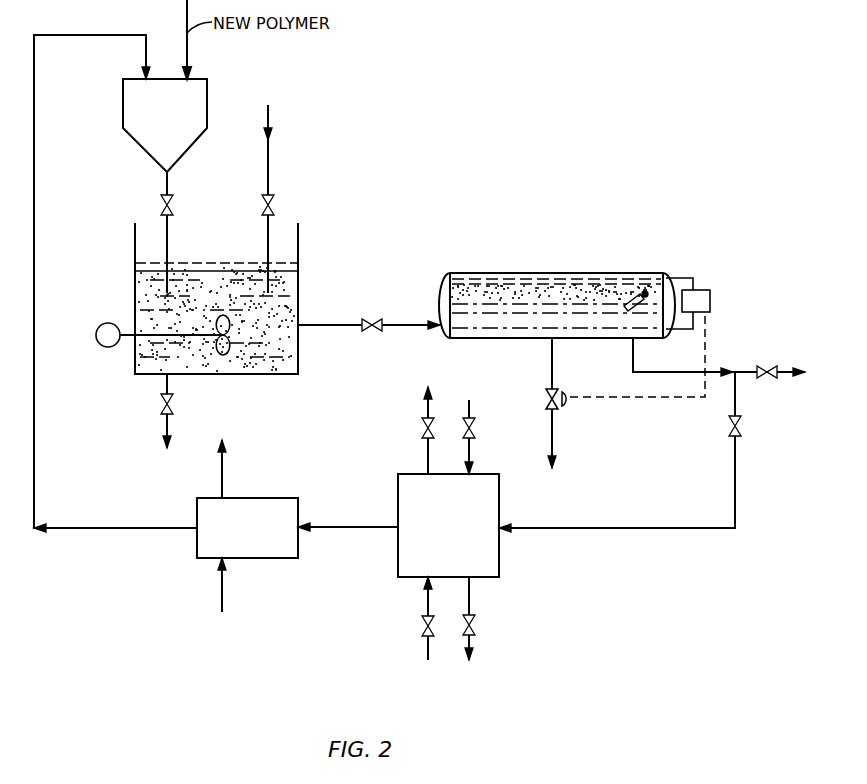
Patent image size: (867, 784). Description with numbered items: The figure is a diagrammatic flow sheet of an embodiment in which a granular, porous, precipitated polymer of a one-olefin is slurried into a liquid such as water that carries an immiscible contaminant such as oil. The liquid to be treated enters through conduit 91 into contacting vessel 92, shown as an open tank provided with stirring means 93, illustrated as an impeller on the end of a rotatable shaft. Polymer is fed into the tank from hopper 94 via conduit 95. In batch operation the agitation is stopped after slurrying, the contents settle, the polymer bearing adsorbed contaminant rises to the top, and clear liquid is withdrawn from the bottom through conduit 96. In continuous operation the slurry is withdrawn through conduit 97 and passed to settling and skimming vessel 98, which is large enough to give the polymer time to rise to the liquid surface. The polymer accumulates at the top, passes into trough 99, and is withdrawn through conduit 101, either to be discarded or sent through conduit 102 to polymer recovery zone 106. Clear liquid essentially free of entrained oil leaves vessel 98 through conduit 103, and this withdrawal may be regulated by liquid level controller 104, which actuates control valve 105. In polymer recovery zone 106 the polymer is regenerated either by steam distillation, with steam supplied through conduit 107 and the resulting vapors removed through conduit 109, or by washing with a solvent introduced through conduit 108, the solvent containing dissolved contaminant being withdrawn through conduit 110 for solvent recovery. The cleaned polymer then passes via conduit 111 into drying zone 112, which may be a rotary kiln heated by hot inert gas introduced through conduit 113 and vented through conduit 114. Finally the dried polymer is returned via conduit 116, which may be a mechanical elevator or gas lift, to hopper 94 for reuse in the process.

The conduit 91 is at (268, 150).
The contacting vessel 92 is at (298, 256).
The stirring means 93 is at (124, 330).
The hopper 94 is at (203, 118).
The conduit 95 is at (167, 240).
The conduit 96 is at (167, 430).
The conduit 97 is at (312, 325).
The settling and skimming vessel 98 is at (520, 273).
The trough 99 is at (642, 297).
The conduit 101 is at (636, 366).
The conduit 102 is at (668, 528).
The conduit 103 is at (552, 376).
The liquid level controller 104 is at (708, 290).
The control valve 105 is at (562, 409).
The polymer recovery zone 106 is at (499, 490).
The conduit 107 is at (428, 600).
The conduit 108 is at (469, 458).
The conduit 109 is at (428, 451).
The conduit 110 is at (469, 606).
The conduit 111 is at (378, 530).
The drying zone 112 is at (265, 498).
The conduit 113 is at (222, 592).
The conduit 114 is at (222, 478).
The conduit 116 is at (34, 442).